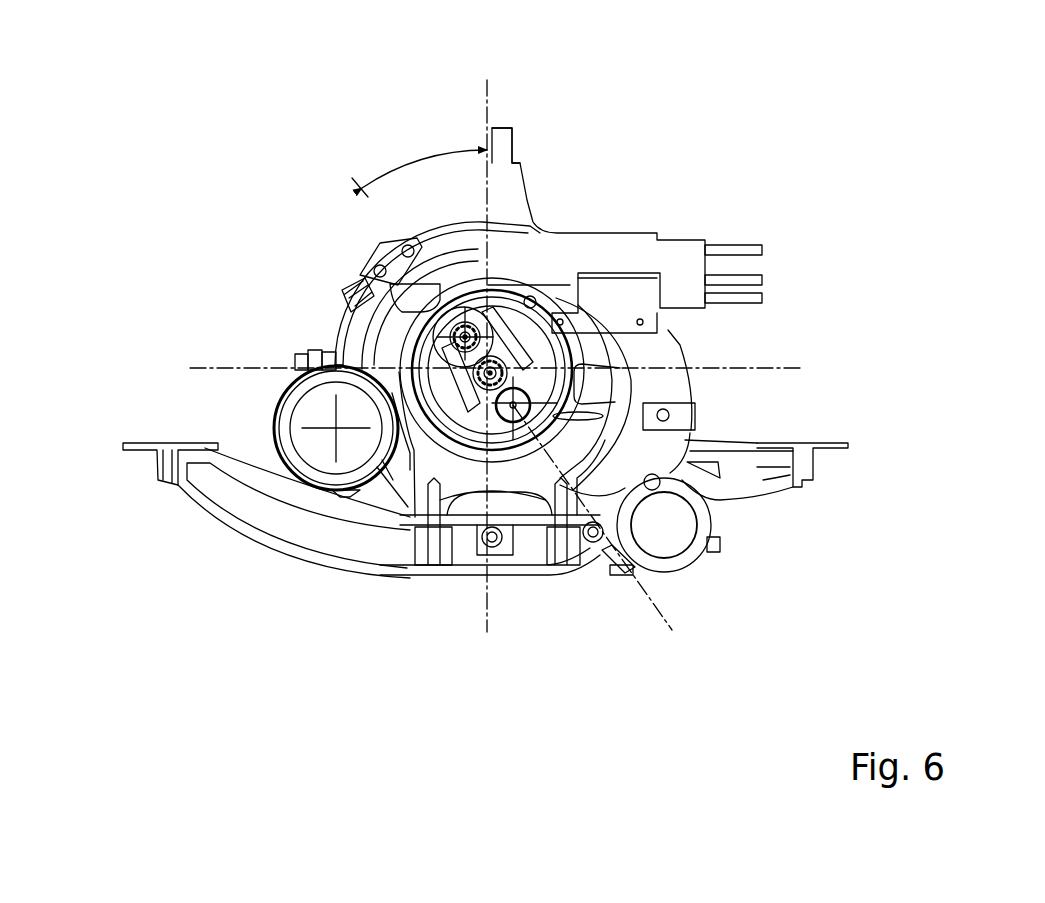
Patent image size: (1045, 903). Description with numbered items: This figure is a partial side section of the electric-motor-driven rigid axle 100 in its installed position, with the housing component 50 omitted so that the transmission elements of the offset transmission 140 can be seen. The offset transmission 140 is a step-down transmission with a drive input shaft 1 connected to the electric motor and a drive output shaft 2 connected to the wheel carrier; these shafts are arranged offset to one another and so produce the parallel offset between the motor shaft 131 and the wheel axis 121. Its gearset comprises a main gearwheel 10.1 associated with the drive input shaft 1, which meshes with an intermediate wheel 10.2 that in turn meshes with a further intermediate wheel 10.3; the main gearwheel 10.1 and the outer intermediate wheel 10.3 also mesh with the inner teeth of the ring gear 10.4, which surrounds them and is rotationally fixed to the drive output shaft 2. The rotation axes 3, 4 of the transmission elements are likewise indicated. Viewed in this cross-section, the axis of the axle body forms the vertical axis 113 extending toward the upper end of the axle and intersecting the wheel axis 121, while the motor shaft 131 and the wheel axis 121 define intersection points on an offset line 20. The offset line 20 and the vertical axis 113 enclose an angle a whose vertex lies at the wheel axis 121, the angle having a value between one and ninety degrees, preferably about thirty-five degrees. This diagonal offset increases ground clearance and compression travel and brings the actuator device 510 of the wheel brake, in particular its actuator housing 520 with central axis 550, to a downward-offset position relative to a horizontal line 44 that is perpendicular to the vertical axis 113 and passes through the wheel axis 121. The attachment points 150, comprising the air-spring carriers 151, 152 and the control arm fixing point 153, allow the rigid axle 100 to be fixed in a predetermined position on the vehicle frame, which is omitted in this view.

The rigid axle 100 is at (772, 215).
The drive input shaft 1 is at (654, 395).
The motor shaft 131 is at (580, 357).
The drive output shaft 2 is at (602, 211).
The wheel axis 121 is at (492, 372).
The rotation axis 3 is at (530, 395).
The rotation axis 4 is at (452, 338).
The housing component 50 is at (326, 187).
The ring gear 10.4 is at (355, 298).
The offset transmission 140 is at (362, 240).
The intermediate wheel 10.3 is at (362, 335).
The intermediate wheel 10.2 is at (342, 338).
The actuator housing 520 is at (323, 352).
The actuator device 510 is at (300, 350).
The horizontal line 44 is at (260, 367).
The central axis 550 is at (340, 430).
The attachment point 150 is at (486, 248).
The control arm fixing point 153 is at (512, 150).
The air-spring carrier 151 is at (150, 445).
The air-spring carrier 152 is at (832, 443).
The vertical axis 113 is at (488, 603).
The main gearwheel 10.1 is at (553, 573).
The offset line 20 is at (668, 627).